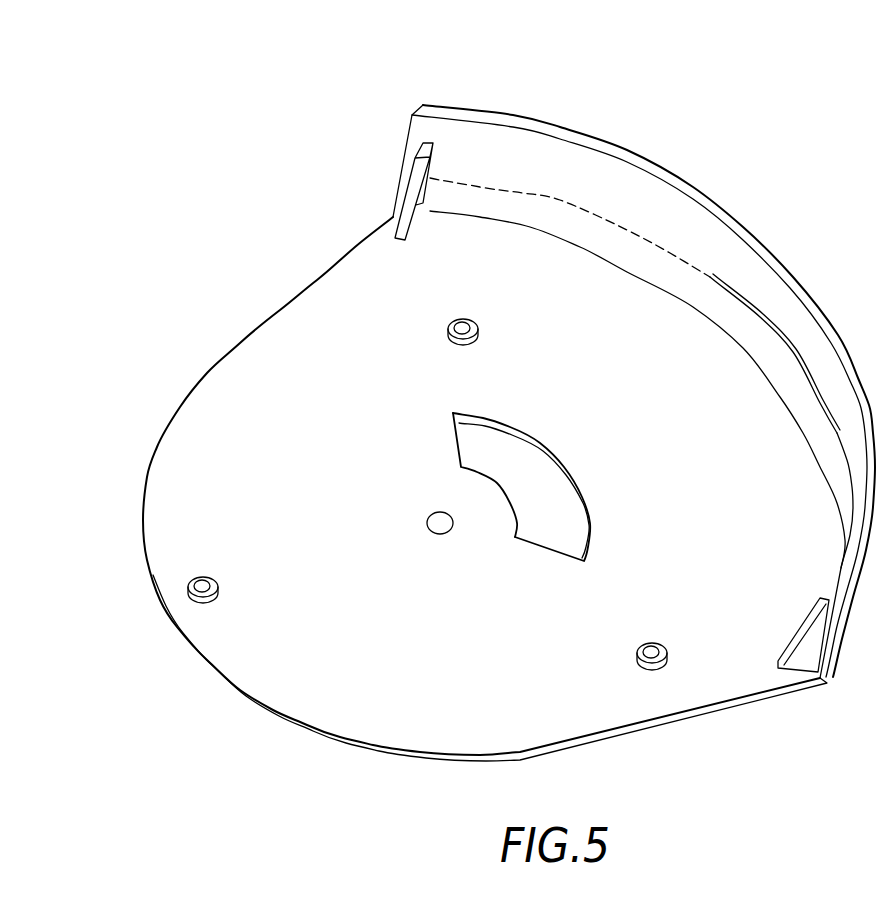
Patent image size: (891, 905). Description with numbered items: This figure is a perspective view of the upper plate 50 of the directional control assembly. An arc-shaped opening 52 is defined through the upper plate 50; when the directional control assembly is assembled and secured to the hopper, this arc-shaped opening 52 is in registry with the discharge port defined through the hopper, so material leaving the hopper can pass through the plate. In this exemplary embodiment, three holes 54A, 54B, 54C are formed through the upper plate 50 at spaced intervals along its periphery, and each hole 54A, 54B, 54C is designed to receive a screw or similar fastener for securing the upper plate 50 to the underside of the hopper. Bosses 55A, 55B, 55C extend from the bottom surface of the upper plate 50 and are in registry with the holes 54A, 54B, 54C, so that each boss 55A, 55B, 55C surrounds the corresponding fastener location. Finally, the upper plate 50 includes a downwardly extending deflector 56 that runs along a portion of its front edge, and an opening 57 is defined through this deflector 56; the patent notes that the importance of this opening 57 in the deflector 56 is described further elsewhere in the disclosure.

The upper plate 50 is at (158, 537).
The arc-shaped opening 52 is at (452, 433).
The hole 54A is at (460, 327).
The hole 54B is at (192, 592).
The hole 54C is at (660, 650).
The boss 55A is at (453, 337).
The boss 55B is at (208, 598).
The boss 55C is at (657, 670).
The deflector 56 is at (513, 137).
The opening 57 is at (507, 197).